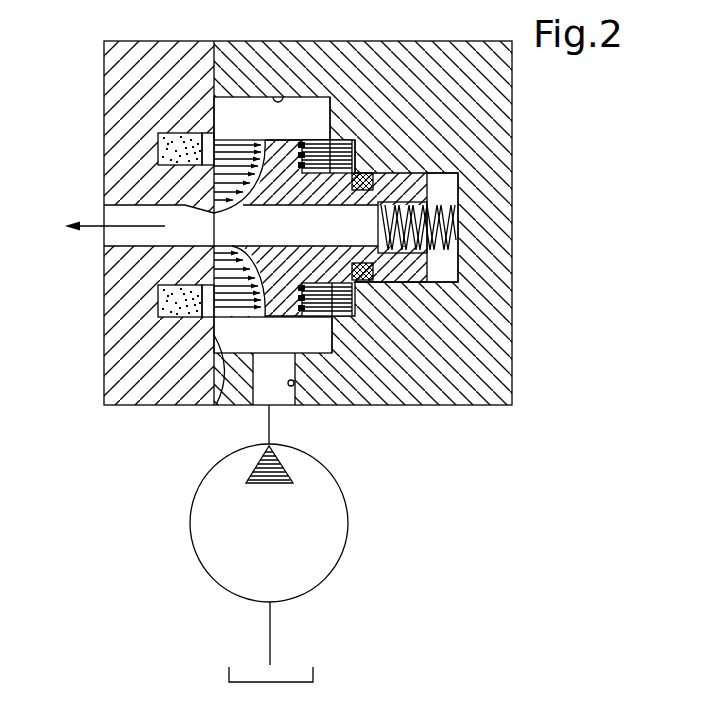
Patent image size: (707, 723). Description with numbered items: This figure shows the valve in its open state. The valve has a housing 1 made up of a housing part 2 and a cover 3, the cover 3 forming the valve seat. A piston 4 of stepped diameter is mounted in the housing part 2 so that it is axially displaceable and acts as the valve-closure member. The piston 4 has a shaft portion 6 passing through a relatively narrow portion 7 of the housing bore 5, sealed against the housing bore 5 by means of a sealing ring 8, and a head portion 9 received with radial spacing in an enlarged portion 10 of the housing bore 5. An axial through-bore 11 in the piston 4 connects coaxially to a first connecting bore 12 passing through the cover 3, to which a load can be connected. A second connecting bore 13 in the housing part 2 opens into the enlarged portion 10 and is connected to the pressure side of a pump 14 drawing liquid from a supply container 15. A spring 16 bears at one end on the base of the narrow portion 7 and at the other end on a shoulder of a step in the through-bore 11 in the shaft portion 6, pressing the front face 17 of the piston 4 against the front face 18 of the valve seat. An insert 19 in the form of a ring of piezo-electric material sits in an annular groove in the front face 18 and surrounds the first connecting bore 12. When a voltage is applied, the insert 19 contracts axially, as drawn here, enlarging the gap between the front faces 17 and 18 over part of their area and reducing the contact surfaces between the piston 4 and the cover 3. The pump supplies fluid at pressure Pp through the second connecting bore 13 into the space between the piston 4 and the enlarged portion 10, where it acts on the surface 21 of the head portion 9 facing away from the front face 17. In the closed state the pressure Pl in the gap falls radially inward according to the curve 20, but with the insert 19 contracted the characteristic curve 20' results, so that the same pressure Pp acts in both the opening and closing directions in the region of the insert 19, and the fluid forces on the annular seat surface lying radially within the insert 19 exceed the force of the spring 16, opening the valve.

The housing 1 is at (252, 35).
The housing part 2 is at (497, 355).
The cover 3 is at (105, 62).
The piston 4 is at (309, 243).
The housing bore 5 is at (335, 122).
The shaft portion 6 is at (428, 283).
The narrow portion of the housing bore 7 is at (448, 275).
The seal 8 is at (372, 182).
The head portion 9 is at (383, 400).
The enlarged portion of the housing bore 10 is at (298, 113).
The axial through-bore 11 is at (213, 204).
The first connecting bore 12 is at (110, 207).
The second connecting bore 13 is at (294, 386).
The pump 14 is at (349, 528).
The supply container 15 is at (313, 670).
The spring 16 is at (443, 212).
The front face of the piston 17 is at (213, 176).
The front face of the valve seat 18 is at (213, 404).
The insert 19 is at (160, 300).
The curve 20 is at (133, 332).
The characteristic curve 20' is at (152, 278).
The surface of the head portion 21 is at (358, 132).
The pump pressure Pp is at (375, 118).
The pressure in the gap Pl is at (213, 140).